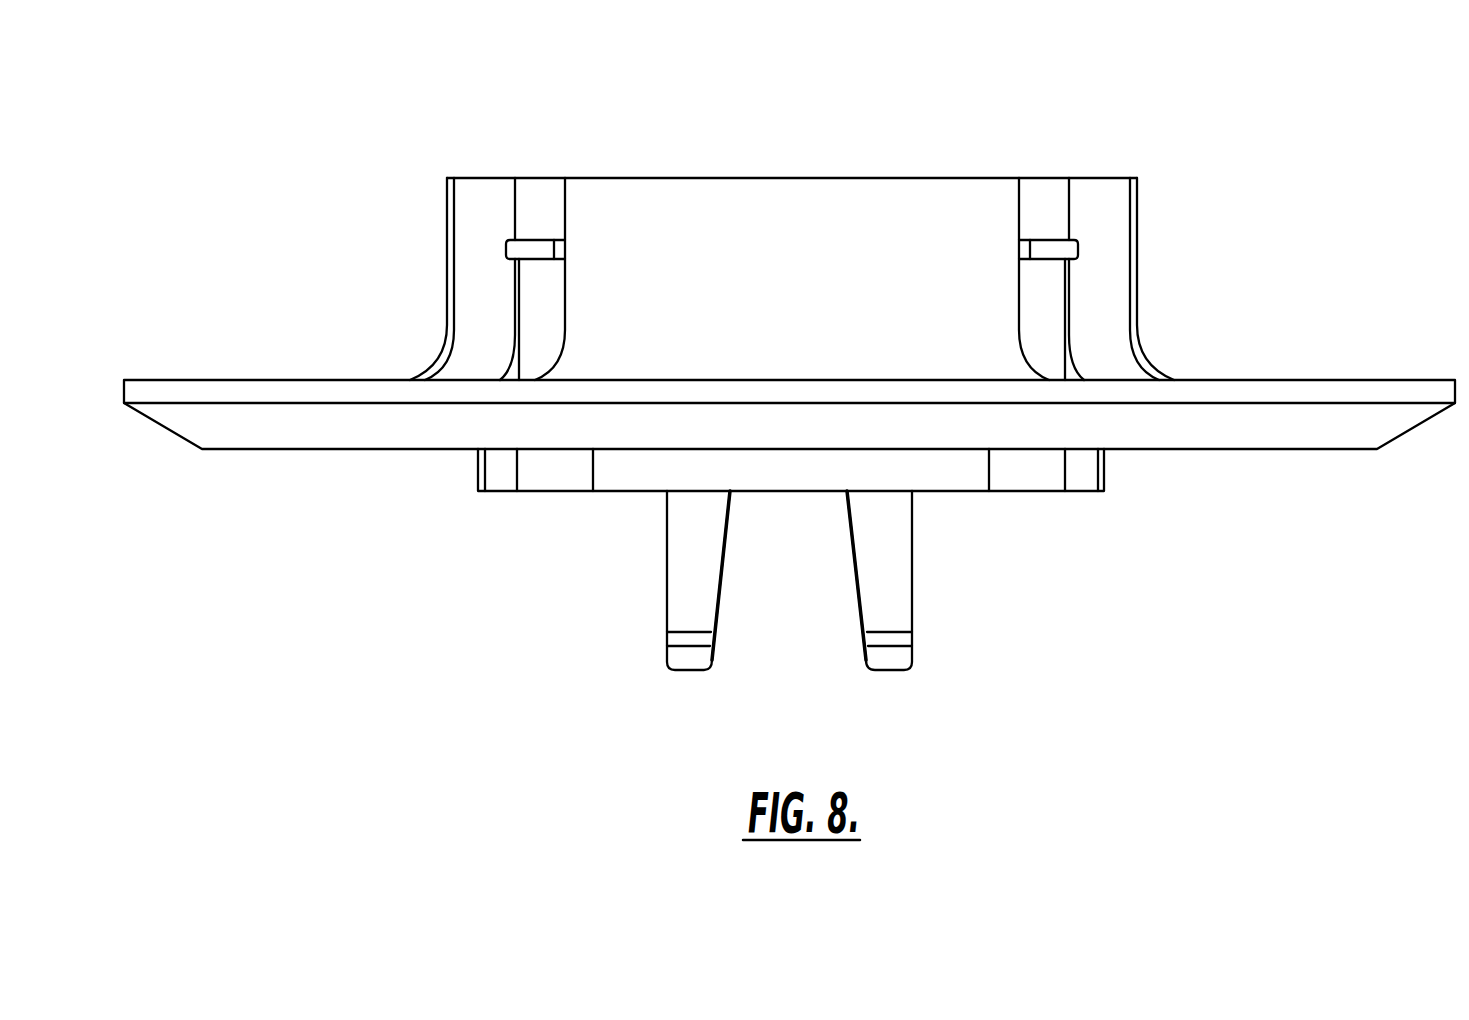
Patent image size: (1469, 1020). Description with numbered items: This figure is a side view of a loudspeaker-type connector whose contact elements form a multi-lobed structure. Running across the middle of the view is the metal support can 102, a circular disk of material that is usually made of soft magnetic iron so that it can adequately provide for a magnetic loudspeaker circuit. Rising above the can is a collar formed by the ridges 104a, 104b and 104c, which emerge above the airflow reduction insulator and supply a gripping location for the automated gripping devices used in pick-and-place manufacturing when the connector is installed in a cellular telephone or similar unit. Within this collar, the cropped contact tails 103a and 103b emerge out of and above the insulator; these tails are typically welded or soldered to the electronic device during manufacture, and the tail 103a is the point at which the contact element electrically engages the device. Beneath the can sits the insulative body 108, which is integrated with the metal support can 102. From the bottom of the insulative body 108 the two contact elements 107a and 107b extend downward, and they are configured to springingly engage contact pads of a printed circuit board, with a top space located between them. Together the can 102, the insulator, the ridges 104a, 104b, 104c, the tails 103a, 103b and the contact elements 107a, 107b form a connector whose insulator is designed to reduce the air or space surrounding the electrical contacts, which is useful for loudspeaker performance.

The metal support can 102 is at (1312, 435).
The cropped contact tail 103a is at (538, 198).
The cropped contact tail 103b is at (1043, 197).
The ridge 104a is at (1115, 238).
The ridge 104b is at (485, 216).
The ridge 104c is at (895, 227).
The contact element 107a is at (693, 583).
The contact element 107b is at (890, 605).
The insulative body 108 is at (632, 473).